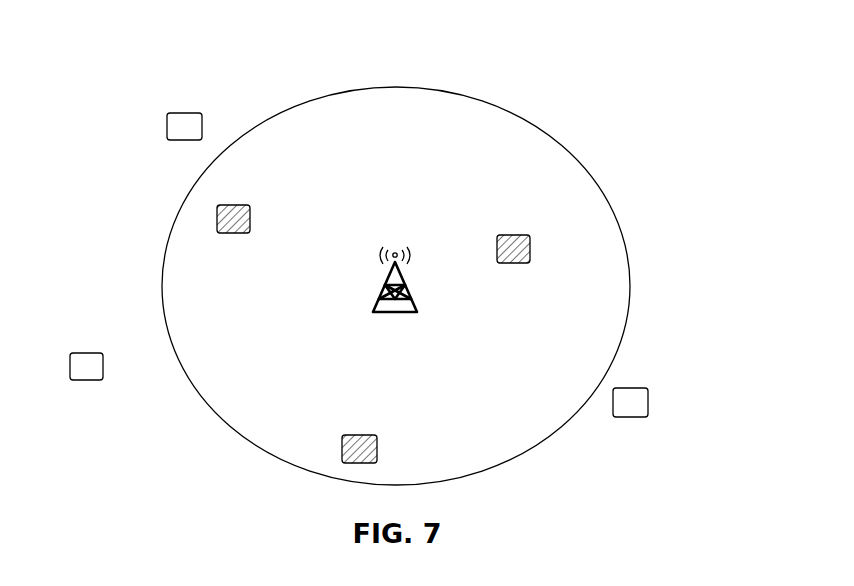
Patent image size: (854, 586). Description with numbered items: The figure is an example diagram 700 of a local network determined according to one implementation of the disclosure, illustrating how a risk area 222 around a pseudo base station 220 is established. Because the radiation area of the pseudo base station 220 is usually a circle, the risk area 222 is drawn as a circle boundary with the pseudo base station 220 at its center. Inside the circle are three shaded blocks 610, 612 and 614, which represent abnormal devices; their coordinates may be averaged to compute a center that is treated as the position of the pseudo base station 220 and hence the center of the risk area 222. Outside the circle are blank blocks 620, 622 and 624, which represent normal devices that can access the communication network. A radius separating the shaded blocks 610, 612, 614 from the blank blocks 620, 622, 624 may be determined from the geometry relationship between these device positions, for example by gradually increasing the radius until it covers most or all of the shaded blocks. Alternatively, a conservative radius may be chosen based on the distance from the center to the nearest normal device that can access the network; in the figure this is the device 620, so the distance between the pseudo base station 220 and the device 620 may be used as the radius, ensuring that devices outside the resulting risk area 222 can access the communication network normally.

The example diagram 700 is at (258, 50).
The risk area 222 is at (556, 141).
The pseudo base station 220 is at (404, 276).
The shaded block (abnormal device) 610 is at (236, 205).
The shaded block (abnormal device) 612 is at (361, 435).
The shaded block (abnormal device) 614 is at (514, 235).
The device (nearest normal device) 620 is at (185, 113).
The device (normal device) 622 is at (89, 353).
The device (normal device) 624 is at (634, 388).